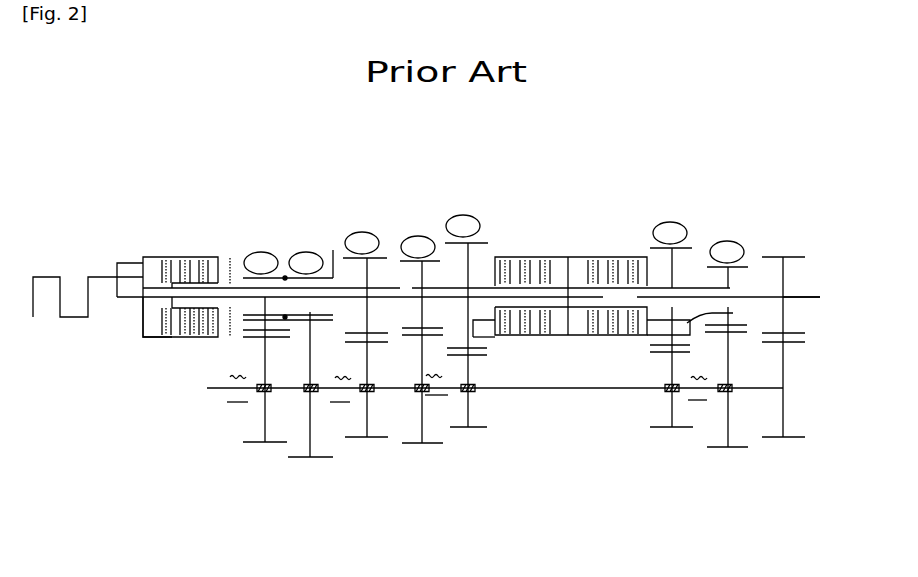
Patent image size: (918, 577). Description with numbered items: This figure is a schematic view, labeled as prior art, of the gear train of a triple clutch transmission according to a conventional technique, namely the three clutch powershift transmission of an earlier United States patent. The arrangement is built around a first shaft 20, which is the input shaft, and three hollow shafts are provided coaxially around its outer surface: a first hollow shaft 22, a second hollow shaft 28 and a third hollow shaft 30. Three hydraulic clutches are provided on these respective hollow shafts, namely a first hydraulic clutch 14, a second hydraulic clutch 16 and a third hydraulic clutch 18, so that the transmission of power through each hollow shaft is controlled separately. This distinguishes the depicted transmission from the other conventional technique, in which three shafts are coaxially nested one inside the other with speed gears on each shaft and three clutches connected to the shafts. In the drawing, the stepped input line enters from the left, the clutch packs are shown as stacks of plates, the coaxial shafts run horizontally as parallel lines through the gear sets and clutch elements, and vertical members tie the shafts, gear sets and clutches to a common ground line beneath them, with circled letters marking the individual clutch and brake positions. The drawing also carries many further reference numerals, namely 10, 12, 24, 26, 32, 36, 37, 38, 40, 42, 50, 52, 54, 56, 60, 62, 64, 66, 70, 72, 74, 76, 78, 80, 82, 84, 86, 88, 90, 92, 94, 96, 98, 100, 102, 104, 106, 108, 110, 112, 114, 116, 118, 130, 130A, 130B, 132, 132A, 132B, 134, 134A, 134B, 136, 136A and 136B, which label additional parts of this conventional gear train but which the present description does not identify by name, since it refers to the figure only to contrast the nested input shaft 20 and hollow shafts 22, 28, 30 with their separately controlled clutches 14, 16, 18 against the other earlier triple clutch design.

The transmission 10 is at (648, 134).
The input shaft 12 is at (35, 276).
The first hydraulic clutch 14 is at (156, 254).
The second hydraulic clutch 16 is at (618, 255).
The third hydraulic clutch 18 is at (531, 255).
The first shaft 20 is at (143, 300).
The first hollow shaft 22 is at (230, 257).
The transmission case 24 is at (314, 514).
The ground member 26 is at (210, 393).
The second hollow shaft 28 is at (662, 305).
The third hollow shaft 30 is at (478, 309).
The output shaft 32 is at (820, 297).
The friction plate 36 is at (173, 321).
The friction plate 37 is at (186, 262).
The friction plate 38 is at (200, 321).
The friction plate 40 is at (210, 333).
The input member 42 is at (120, 264).
The ring gear 50 is at (607, 337).
The sun gear 52 is at (587, 283).
The planet carrier 54 is at (563, 337).
The carrier member 56 is at (567, 283).
The connecting member 60 is at (733, 313).
The planet gear 62 is at (530, 315).
The planet gear 64 is at (547, 280).
The sun gear 66 is at (483, 336).
The clutch assembly 70 is at (304, 221).
The clutch member 72 is at (333, 262).
The brake member 74 is at (312, 443).
The clutch 2 76 is at (731, 240).
The clutch connecting member 78 is at (730, 277).
The brake 80 is at (730, 357).
The clutch 3 82 is at (418, 237).
The clutch connecting member 84 is at (422, 266).
The brake 86 is at (422, 420).
The clutch 4 88 is at (361, 230).
The clutch connecting member 90 is at (367, 265).
The brake 92 is at (370, 352).
The clutch 5 94 is at (672, 220).
The connecting member 96 is at (673, 281).
The brake 98 is at (672, 412).
The clutch 6 100 is at (464, 213).
The connecting member 102 is at (467, 247).
The support member 104 is at (475, 407).
The reverse clutch R 106 is at (262, 250).
The clutch connecting member 108 is at (263, 287).
The support member 110 is at (258, 420).
The clutch 112 is at (285, 318).
The output member 114 is at (790, 250).
The bearing 116 is at (790, 276).
The bearing 118 is at (785, 372).
The dog clutch 130 is at (343, 404).
The dog clutch element 130A is at (358, 370).
The dog clutch element 130B is at (340, 378).
The dog clutch 132 is at (705, 403).
The dog clutch element 132A is at (700, 376).
The dog clutch element 132B is at (700, 380).
The dog clutch 134 is at (438, 366).
The dog clutch element 134A is at (440, 371).
The dog clutch element 134B is at (425, 392).
The dog clutch 136 is at (240, 404).
The dog clutch element 136A is at (228, 373).
The dog clutch element 136B is at (235, 395).